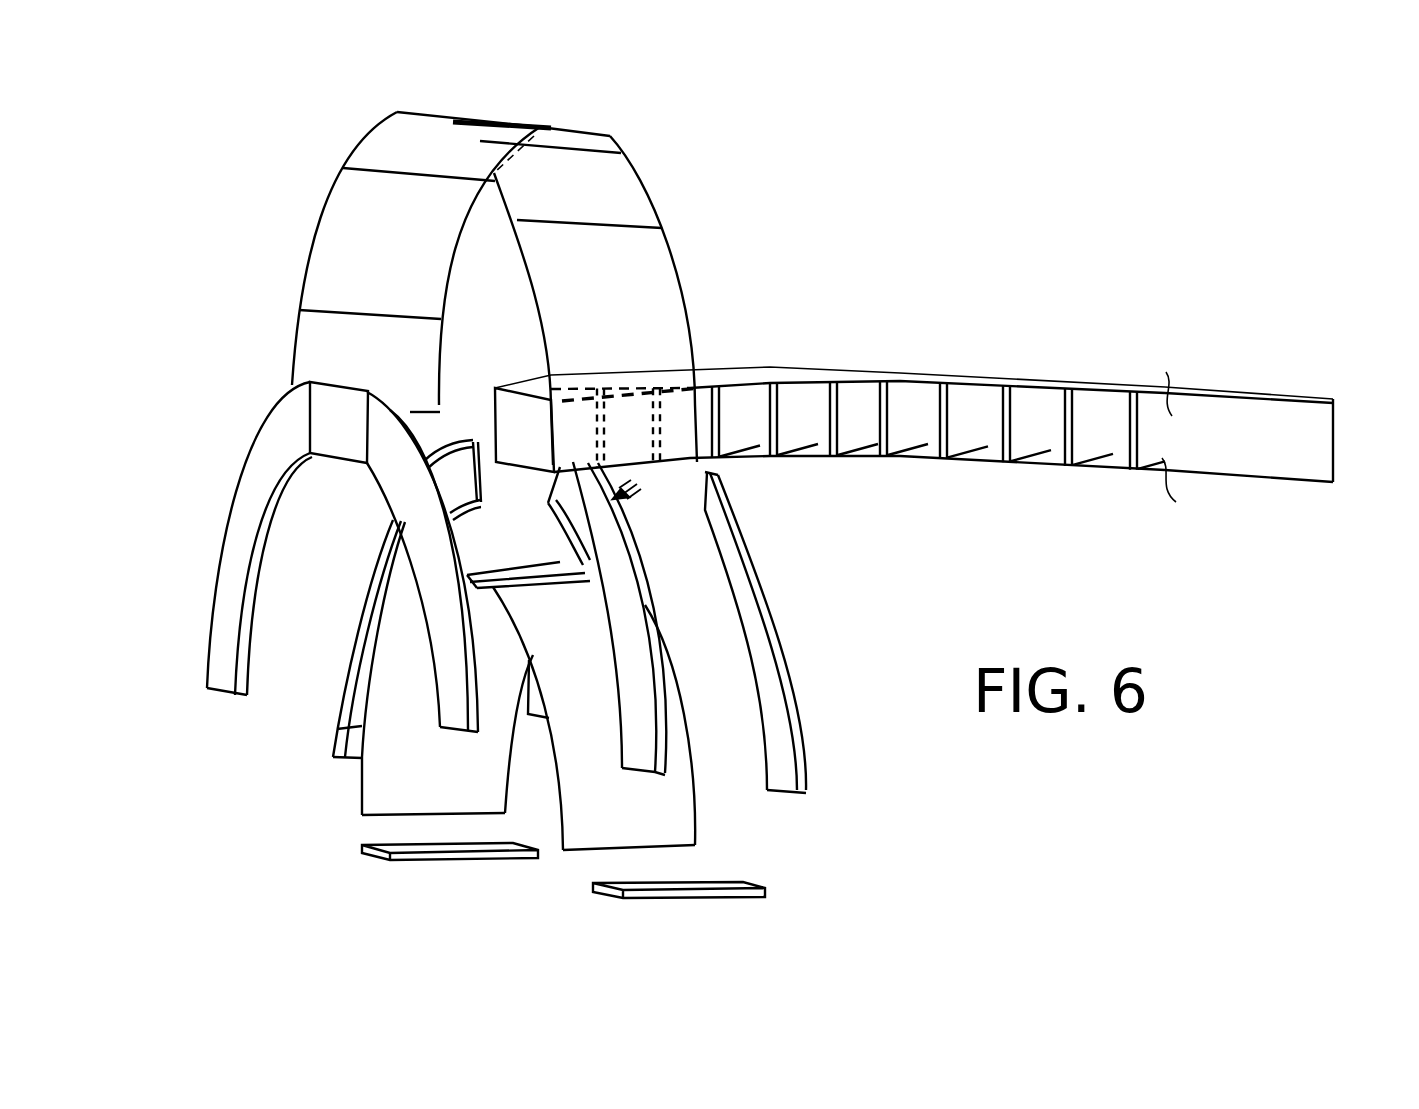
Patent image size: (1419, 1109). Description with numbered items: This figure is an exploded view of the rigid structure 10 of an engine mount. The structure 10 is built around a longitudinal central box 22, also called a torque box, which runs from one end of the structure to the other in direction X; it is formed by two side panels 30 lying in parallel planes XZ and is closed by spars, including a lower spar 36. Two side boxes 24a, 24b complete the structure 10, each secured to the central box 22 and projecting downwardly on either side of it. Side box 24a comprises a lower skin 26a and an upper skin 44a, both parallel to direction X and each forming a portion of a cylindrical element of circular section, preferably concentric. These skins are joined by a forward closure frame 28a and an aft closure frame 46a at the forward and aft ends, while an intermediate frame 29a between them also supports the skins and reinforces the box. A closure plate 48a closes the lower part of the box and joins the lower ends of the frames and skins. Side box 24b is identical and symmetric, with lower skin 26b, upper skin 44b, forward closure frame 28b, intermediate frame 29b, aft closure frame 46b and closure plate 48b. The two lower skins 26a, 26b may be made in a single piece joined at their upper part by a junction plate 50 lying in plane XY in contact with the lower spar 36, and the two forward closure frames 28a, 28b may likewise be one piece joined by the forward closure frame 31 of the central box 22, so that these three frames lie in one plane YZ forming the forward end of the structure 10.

The rigid structure 10 is at (1133, 287).
The longitudinal central box 22 is at (985, 373).
The side box 24a is at (542, 892).
The side box 24b is at (237, 258).
The lower skin 26a is at (688, 812).
The lower skin 26b is at (385, 788).
The forward closure frame 28a is at (385, 552).
The forward closure frame 28b is at (242, 523).
The intermediate frame 29a is at (625, 583).
The intermediate frame 29b is at (360, 727).
The side panel 30 is at (1237, 373).
The forward closure frame 31 is at (328, 423).
The lower spar 36 is at (492, 444).
The upper skin 44a is at (650, 254).
The upper skin 44b is at (322, 202).
The aft closure frame 46a is at (767, 618).
The aft closure frame 46b is at (618, 494).
The closure plate 48a is at (703, 895).
The closure plate 48b is at (375, 853).
The junction plate 50 is at (514, 573).